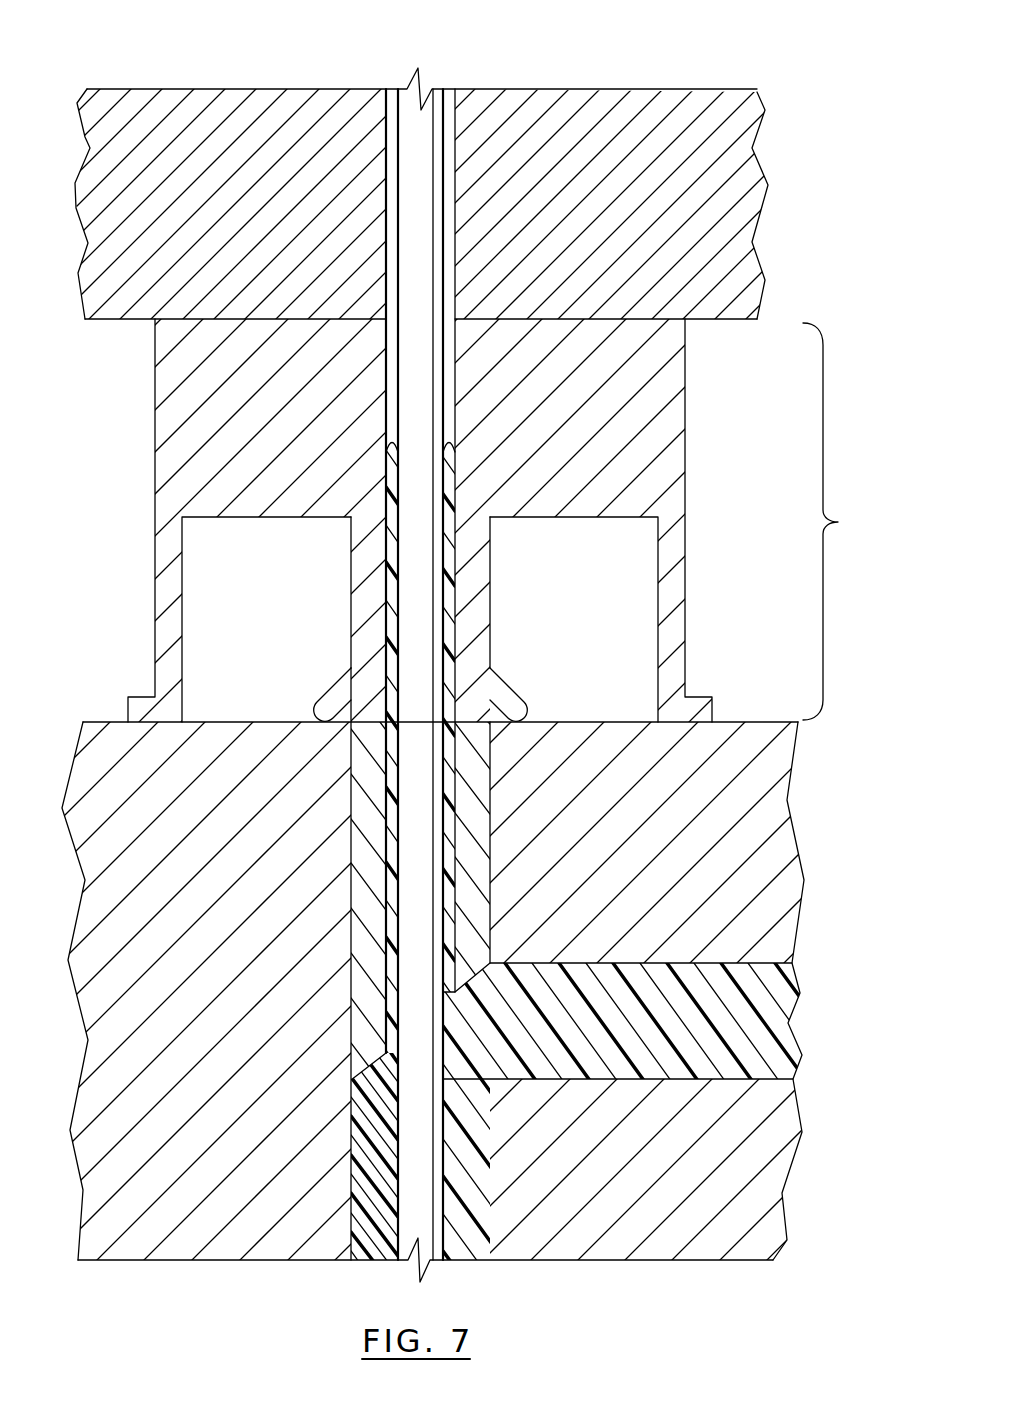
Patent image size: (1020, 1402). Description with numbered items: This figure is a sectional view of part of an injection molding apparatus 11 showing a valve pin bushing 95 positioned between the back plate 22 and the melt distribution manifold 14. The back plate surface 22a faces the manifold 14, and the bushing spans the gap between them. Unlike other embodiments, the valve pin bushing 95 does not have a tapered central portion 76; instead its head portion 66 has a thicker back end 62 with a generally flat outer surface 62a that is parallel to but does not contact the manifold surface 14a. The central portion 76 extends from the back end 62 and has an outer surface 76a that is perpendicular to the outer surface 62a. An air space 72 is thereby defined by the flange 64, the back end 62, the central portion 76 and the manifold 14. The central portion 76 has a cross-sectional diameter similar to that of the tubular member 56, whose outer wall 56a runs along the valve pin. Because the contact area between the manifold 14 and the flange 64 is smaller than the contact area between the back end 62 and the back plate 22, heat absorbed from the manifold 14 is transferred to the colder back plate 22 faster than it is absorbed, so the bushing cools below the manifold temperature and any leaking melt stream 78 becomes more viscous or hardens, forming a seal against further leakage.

The injection molding apparatus 11 is at (757, 76).
The back plate 22 is at (727, 260).
The back plate surface 22a is at (99, 322).
The valve pin bushing 95 is at (698, 426).
The flange 64 is at (670, 602).
The head portion 66 is at (840, 521).
The leaking melt stream 78 is at (453, 473).
The back end 62 is at (290, 480).
The outer surface of back end 62a is at (563, 517).
The air space 72 is at (248, 637).
The central portion 76 is at (373, 642).
The outer surface of central portion 76a is at (490, 610).
The manifold surface 14a is at (570, 722).
The melt distribution manifold 14 is at (762, 770).
The tubular member 56 is at (470, 852).
The outer wall of tubular member 56a is at (350, 890).